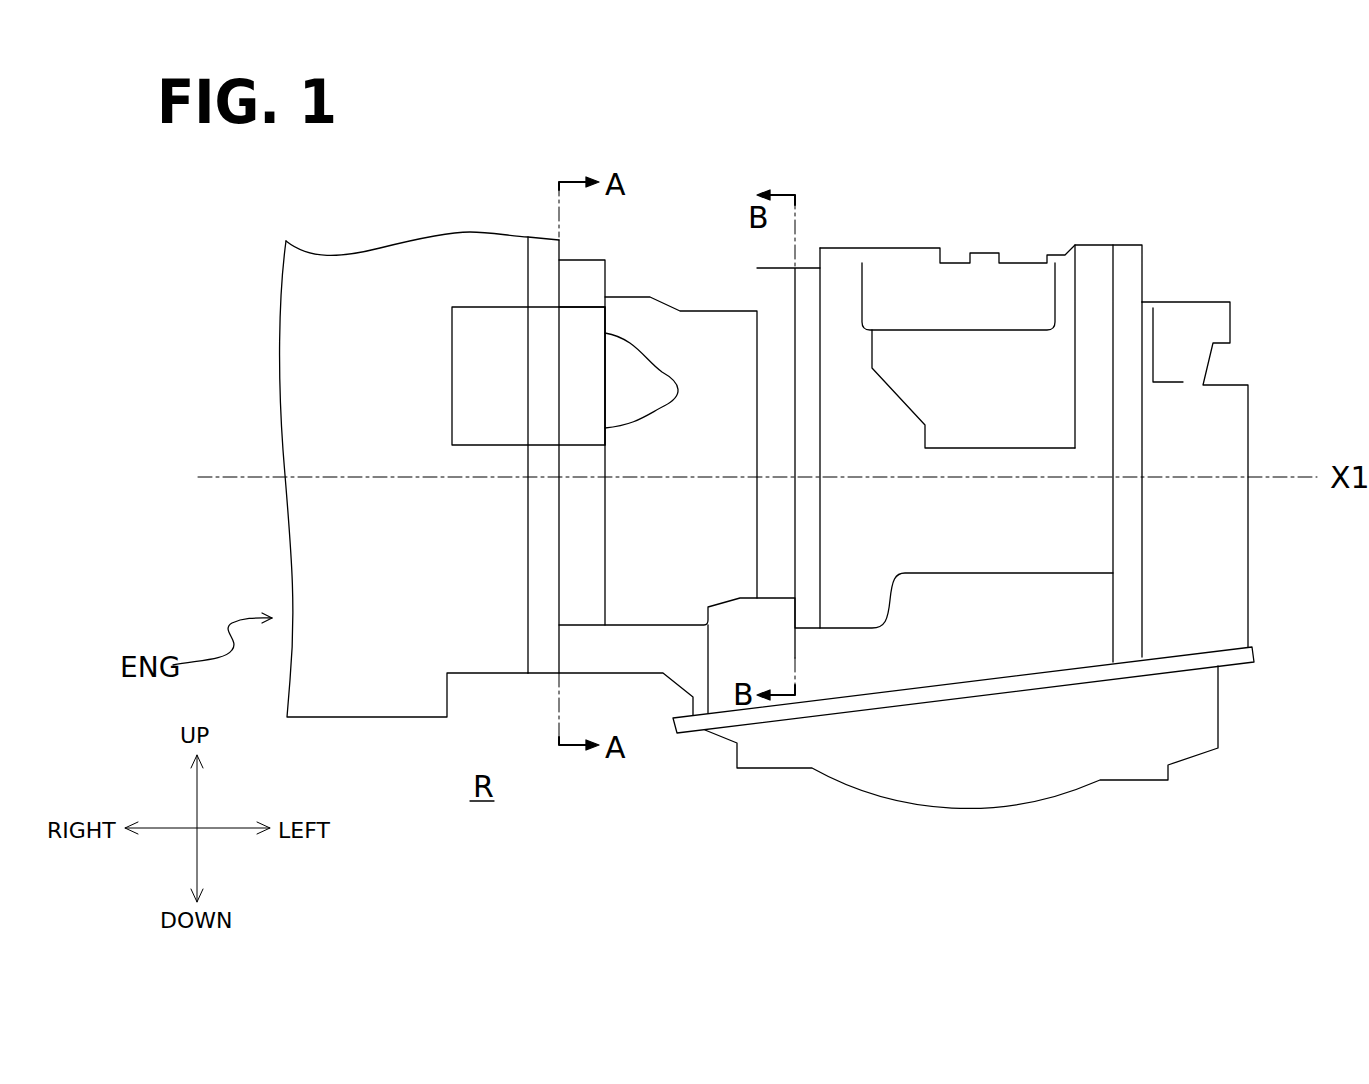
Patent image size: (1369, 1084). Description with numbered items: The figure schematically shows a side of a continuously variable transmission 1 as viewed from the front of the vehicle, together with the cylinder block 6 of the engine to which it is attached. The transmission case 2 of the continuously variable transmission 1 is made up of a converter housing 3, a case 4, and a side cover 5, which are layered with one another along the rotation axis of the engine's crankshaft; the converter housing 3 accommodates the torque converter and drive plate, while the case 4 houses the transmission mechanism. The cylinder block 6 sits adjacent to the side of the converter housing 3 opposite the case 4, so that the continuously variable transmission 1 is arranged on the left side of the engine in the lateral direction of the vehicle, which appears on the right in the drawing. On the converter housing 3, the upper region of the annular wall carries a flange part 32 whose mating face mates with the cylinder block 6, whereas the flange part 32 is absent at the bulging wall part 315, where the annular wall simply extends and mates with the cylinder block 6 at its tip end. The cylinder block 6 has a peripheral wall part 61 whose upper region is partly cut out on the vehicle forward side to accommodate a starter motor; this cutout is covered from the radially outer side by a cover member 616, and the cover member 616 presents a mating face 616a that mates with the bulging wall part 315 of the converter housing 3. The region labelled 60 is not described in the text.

The continuously variable transmission 1 is at (1203, 183).
The transmission case 2 is at (1040, 125).
The converter housing 3 is at (693, 310).
The case 4 is at (927, 247).
The side cover 5 is at (1190, 298).
The cylinder block 6 is at (383, 722).
The flange part 32 is at (588, 255).
The engine housing 60 is at (475, 656).
The peripheral wall part 61 is at (545, 237).
The bulging wall part 315 is at (652, 360).
The cover member 616 is at (452, 388).
The mating face 616a is at (560, 348).